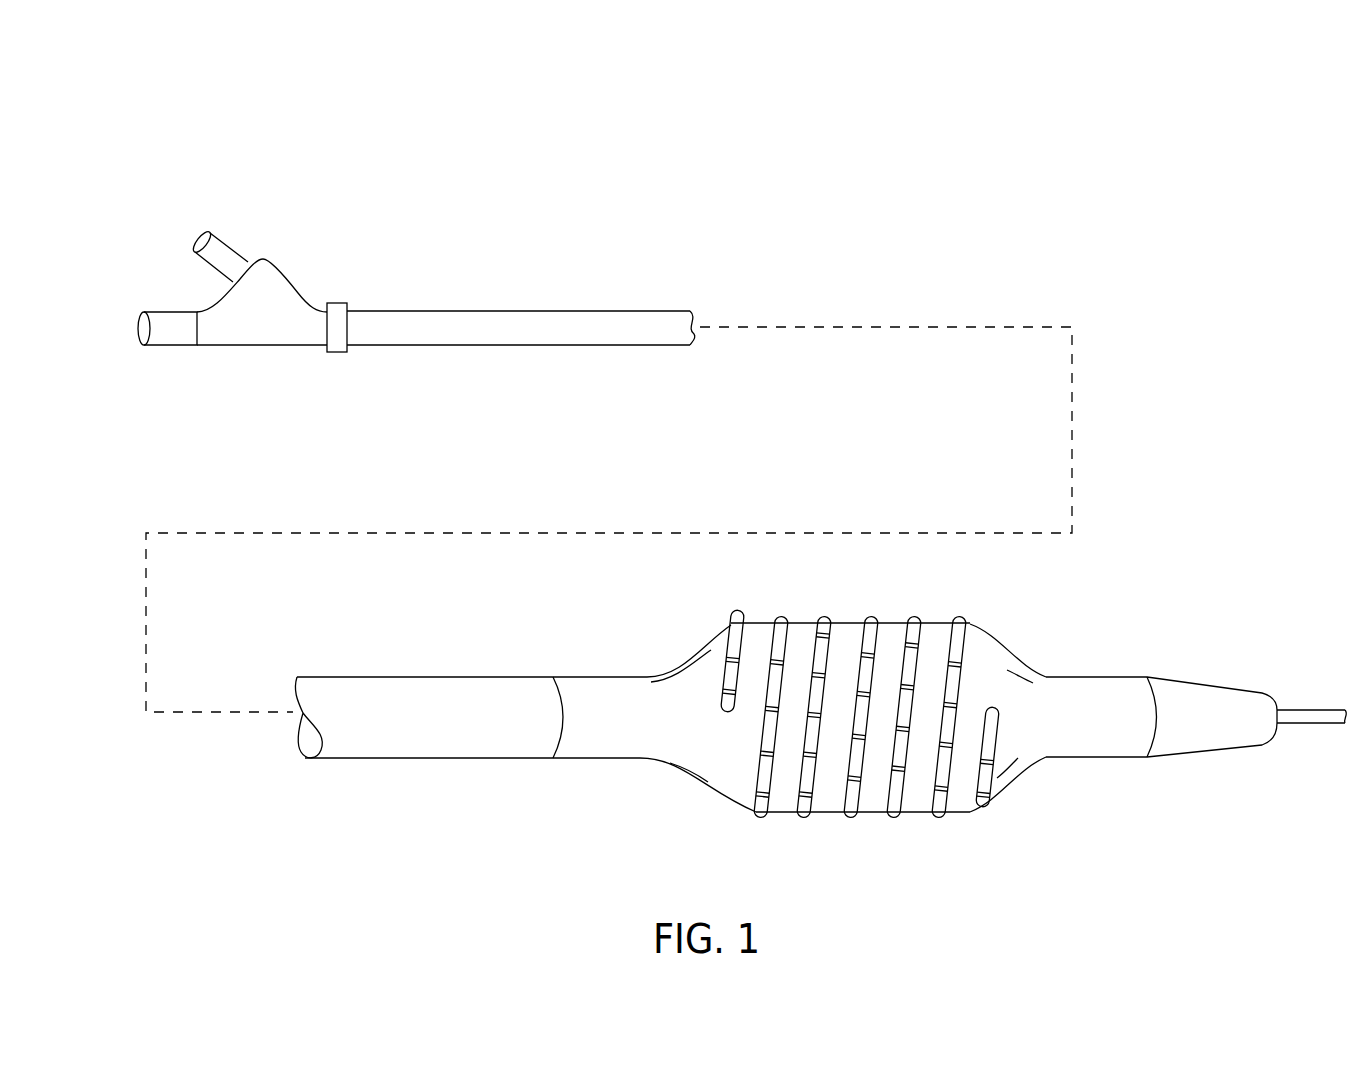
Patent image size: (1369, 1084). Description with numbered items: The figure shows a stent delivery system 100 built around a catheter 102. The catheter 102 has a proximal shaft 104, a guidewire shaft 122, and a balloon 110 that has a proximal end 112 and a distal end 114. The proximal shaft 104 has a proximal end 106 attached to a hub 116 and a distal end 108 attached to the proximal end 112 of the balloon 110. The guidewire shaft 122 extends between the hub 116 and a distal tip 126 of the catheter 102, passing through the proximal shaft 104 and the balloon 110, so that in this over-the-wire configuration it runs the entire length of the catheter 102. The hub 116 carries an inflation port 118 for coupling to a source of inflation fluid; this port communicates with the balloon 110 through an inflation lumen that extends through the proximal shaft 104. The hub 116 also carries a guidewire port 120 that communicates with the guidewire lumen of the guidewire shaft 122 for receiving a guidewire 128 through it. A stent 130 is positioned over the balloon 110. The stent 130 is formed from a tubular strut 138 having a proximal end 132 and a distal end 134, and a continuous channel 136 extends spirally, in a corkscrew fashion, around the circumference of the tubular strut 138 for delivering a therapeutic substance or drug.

The stent delivery system 100 is at (125, 190).
The catheter 102 is at (807, 205).
The proximal shaft 104 is at (536, 308).
The proximal end 106 is at (365, 310).
The distal end 108 is at (498, 676).
The balloon 110 is at (1025, 658).
The proximal end 112 is at (603, 676).
The distal end 114 is at (1113, 676).
The hub 116 is at (284, 262).
The inflation port 118 is at (193, 241).
The guidewire port 120 is at (138, 331).
The guidewire shaft 122 is at (1199, 759).
The distal tip 126 is at (1219, 688).
The guidewire 128 is at (1310, 708).
The stent 130 is at (751, 819).
The proximal end 132 is at (718, 712).
The distal end 134 is at (1009, 736).
The continuous channel 136 is at (829, 625).
The tubular strut 138 is at (921, 622).